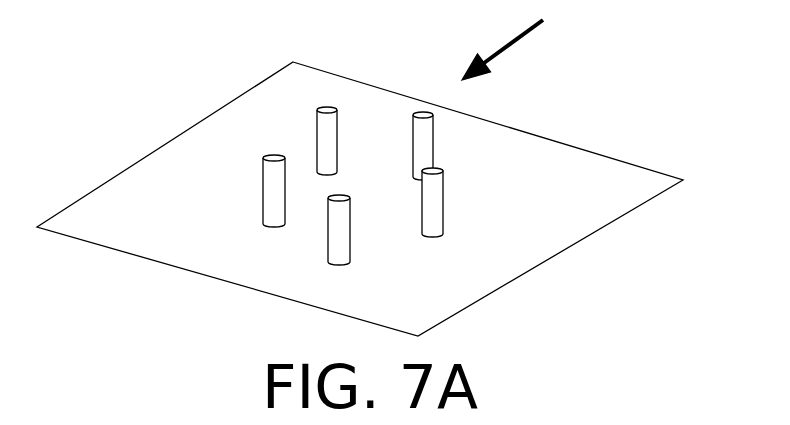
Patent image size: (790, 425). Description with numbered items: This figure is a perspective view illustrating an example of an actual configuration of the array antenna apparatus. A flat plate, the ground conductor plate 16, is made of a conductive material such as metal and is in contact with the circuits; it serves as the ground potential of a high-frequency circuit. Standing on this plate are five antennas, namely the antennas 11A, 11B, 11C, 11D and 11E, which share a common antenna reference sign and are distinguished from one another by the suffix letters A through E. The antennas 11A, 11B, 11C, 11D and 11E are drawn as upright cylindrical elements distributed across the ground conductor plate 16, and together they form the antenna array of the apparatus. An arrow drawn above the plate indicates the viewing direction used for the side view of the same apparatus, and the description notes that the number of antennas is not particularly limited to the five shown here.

The ground conductor plate 16 is at (577, 147).
The antenna 11A is at (433, 135).
The antenna 11B is at (443, 215).
The antenna 11C is at (350, 238).
The antenna 11D is at (263, 200).
The antenna 11E is at (315, 145).